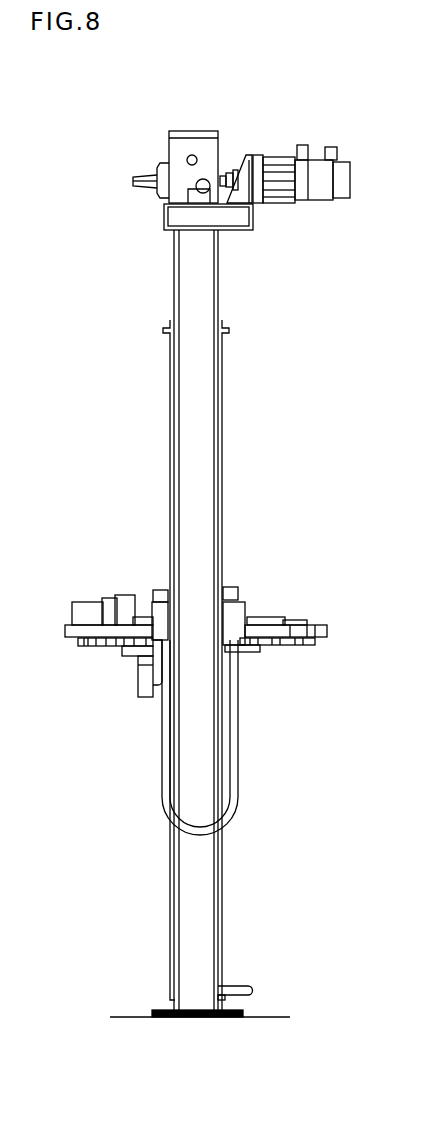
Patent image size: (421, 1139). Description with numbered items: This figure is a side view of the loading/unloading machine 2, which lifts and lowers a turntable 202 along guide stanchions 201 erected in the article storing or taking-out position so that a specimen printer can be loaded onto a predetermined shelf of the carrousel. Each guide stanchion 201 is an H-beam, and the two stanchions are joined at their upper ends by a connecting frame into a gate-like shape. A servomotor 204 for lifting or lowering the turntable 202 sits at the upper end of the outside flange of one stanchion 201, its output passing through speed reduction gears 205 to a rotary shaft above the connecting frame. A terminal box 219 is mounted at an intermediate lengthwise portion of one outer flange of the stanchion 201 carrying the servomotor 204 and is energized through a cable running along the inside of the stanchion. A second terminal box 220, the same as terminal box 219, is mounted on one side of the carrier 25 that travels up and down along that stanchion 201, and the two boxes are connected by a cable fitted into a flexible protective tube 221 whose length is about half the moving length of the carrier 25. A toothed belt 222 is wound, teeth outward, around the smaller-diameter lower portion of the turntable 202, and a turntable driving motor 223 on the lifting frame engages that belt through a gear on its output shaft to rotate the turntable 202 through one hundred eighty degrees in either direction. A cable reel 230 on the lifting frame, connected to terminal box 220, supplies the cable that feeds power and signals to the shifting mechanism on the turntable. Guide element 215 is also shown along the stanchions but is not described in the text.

The loading/unloading machine 2 is at (264, 141).
The carrier 25 is at (232, 585).
The guide stanchion 201 is at (202, 282).
The turntable 202 is at (323, 623).
The servomotor 204 is at (280, 155).
The speed reduction gears 205 is at (200, 130).
The guide rail 215 is at (223, 398).
The terminal box 219 is at (162, 610).
The terminal box 220 is at (232, 612).
The flexible protective tube 221 is at (238, 772).
The toothed belt 222 is at (315, 641).
The turntable driving motor 223 is at (140, 683).
The cable reel 230 is at (87, 605).